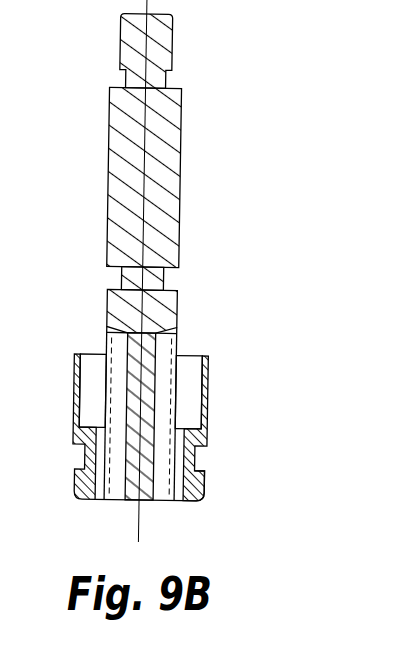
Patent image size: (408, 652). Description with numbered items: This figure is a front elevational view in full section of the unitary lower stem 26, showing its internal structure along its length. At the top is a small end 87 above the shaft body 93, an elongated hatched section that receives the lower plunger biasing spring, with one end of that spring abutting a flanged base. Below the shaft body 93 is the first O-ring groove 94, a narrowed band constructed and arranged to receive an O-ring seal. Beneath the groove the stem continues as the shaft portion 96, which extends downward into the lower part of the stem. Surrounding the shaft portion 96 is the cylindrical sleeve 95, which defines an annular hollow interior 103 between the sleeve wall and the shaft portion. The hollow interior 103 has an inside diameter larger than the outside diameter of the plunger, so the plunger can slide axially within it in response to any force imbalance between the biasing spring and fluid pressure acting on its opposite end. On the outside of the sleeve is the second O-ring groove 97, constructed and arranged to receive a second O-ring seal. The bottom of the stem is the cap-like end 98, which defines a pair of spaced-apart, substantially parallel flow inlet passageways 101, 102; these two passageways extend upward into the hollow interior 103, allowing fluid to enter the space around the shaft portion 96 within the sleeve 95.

The lower stem 26 is at (220, 204).
The cap 87 is at (169, 43).
The shaft body 93 is at (113, 133).
The first O-ring groove 94 is at (120, 275).
The shaft portion 96 is at (153, 308).
The cylindrical sleeve 95 is at (208, 376).
The second O-ring groove 97 is at (84, 454).
The cap-like end 98 is at (203, 488).
The flow inlet passageway 101 is at (172, 482).
The flow inlet passageway 102 is at (102, 488).
The annular hollow interior 103 is at (188, 377).